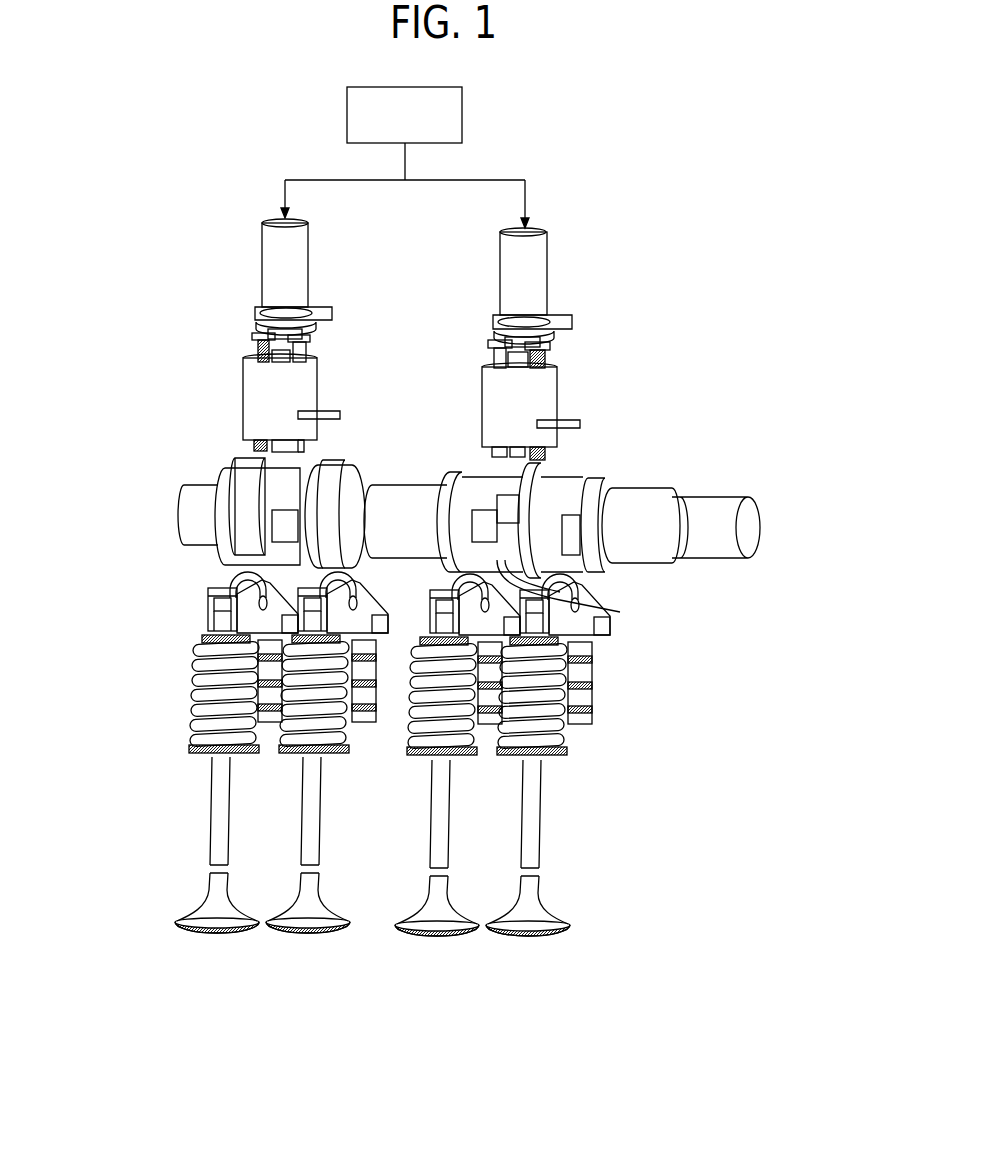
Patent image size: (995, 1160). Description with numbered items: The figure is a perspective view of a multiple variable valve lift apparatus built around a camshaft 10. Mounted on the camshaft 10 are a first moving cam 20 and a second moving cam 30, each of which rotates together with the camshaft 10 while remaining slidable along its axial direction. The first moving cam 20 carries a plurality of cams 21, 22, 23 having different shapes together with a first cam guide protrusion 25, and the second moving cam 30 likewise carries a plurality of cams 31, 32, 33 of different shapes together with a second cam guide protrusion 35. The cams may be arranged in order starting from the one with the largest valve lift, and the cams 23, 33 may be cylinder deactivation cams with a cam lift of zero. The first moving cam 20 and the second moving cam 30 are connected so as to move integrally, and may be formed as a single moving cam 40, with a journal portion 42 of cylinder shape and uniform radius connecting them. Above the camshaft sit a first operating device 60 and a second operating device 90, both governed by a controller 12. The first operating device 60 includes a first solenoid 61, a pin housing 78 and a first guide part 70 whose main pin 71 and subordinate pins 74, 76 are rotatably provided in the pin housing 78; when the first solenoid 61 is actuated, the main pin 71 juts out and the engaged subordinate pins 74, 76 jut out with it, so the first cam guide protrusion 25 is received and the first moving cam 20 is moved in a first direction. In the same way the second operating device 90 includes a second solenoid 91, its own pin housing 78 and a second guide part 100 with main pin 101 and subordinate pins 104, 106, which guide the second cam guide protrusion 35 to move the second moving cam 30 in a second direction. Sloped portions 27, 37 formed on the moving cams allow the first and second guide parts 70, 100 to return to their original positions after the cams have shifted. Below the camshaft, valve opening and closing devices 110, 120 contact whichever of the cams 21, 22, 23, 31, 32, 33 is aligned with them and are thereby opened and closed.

The camshaft 10 is at (715, 490).
The controller 12 is at (462, 113).
The first moving cam 20 is at (307, 448).
The cam 21 is at (390, 450).
The cam 22 is at (340, 465).
The cam 23 is at (318, 472).
The first cam guide protrusion 25 is at (258, 576).
The sloped portion 27 is at (283, 523).
The second moving cam 30 is at (539, 473).
The cam 31 is at (608, 470).
The cam 32 is at (588, 470).
The cam 33 is at (575, 455).
The second cam guide protrusion 35 is at (585, 586).
The sloped portion 37 is at (640, 485).
The moving cam 40 is at (416, 292).
The journal portion 42 is at (378, 598).
The first operating device 60 is at (251, 344).
The first solenoid 61 is at (270, 268).
The first guide part 70 is at (312, 353).
The main pin 71 is at (258, 352).
The subordinate pin 74 is at (241, 455).
The subordinate pin 76 is at (255, 445).
The pin housing 78 is at (258, 400).
The second operating device 90 is at (549, 344).
The second solenoid 91 is at (508, 274).
The second guide part 100 is at (548, 352).
The main pin 101 is at (500, 357).
The subordinate pin 104 is at (536, 445).
The subordinate pin 106 is at (490, 451).
The valve opening and closing device 110 is at (215, 935).
The valve opening and closing device 120 is at (437, 937).